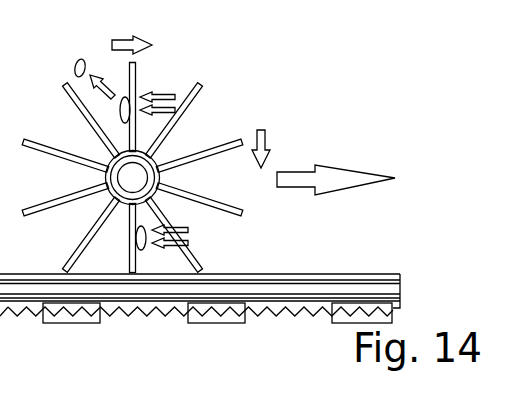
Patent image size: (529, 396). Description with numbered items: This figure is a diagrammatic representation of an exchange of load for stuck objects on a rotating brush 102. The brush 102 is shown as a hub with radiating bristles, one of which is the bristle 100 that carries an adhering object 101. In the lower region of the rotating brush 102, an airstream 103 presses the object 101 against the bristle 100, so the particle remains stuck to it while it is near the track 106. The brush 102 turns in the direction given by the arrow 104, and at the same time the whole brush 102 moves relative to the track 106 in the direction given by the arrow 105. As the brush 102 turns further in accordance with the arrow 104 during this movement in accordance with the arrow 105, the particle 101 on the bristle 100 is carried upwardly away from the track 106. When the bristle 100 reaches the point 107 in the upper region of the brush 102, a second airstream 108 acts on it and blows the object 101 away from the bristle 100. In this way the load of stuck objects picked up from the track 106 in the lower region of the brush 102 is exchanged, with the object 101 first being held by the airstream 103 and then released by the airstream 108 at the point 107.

The bristle 100 is at (130, 253).
The object 101 is at (143, 249).
The rotating brush 102 is at (210, 109).
The airstream 103 is at (188, 230).
The arrow 104 is at (267, 138).
The arrow 105 is at (360, 168).
The track 106 is at (365, 273).
The point 107 is at (120, 108).
The airstream 108 is at (168, 94).